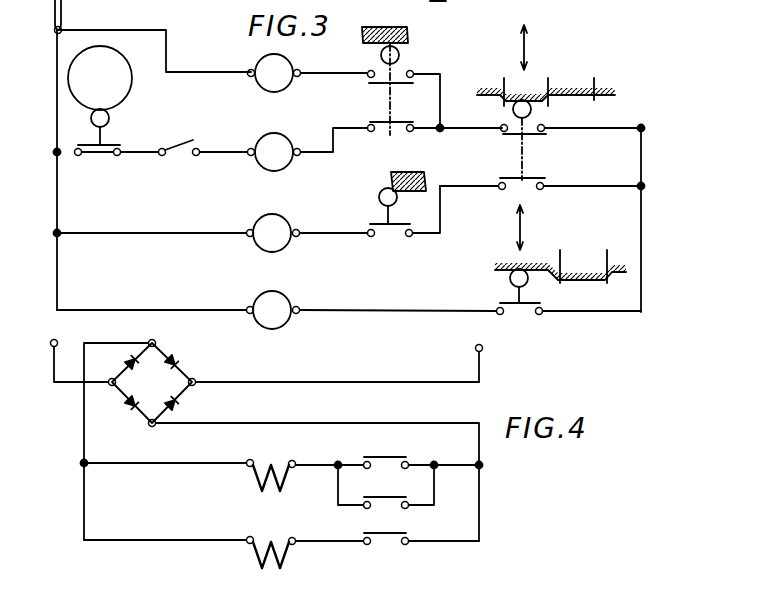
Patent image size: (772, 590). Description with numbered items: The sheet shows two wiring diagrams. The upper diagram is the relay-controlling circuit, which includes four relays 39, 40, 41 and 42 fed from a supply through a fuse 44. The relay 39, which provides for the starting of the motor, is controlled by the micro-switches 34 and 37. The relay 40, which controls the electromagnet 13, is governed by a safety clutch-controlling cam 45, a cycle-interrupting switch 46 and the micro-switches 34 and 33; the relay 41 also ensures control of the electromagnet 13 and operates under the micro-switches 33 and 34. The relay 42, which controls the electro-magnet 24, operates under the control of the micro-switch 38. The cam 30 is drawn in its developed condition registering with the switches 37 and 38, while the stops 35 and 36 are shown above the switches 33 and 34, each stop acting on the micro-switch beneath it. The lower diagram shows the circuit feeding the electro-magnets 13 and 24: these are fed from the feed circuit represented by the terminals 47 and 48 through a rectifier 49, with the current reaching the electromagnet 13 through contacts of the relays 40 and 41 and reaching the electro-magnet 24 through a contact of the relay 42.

In FIG. 4, the electromagnet 13 is at (261, 479).
In FIG. 4, the electro-magnet 24 is at (260, 556).
In FIG. 3, the cam 30 is at (532, 95).
In FIG. 3, the micro-switch 33 is at (128, 3).
In FIG. 3, the micro-switch 34 is at (404, 88).
In FIG. 3, the stop 35 is at (410, 170).
In FIG. 3, the stop 36 is at (385, 24).
In FIG. 3, the micro-switch 37 is at (539, 140).
In FIG. 3, the micro-switch 38 is at (508, 292).
In FIG. 3, the relay 39 is at (269, 63).
In FIG. 3, the relay 40 is at (268, 143).
In FIG. 4, the relay 40 is at (389, 451).
In FIG. 3, the relay 41 is at (266, 224).
In FIG. 4, the relay 41 is at (389, 491).
In FIG. 3, the relay 42 is at (266, 301).
In FIG. 4, the relay 42 is at (389, 528).
In FIG. 3, the fuse 44 is at (64, 12).
In FIG. 3, the safety clutch-controlling cam 45 is at (104, 95).
In FIG. 3, the cycle-interrupting switch 46 is at (179, 162).
In FIG. 4, the terminal 47 is at (58, 336).
In FIG. 4, the terminal 48 is at (492, 360).
In FIG. 4, the rectifier 49 is at (152, 383).